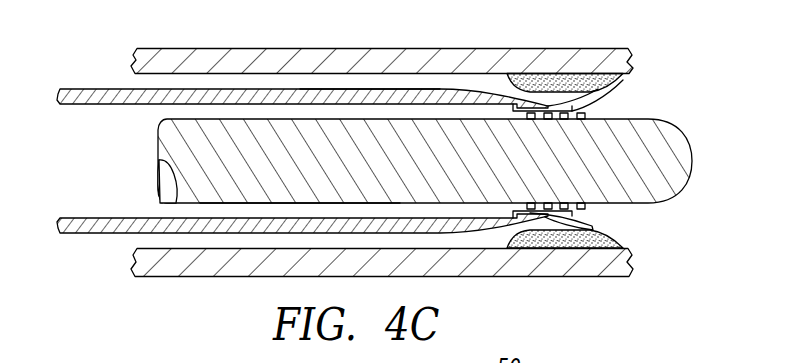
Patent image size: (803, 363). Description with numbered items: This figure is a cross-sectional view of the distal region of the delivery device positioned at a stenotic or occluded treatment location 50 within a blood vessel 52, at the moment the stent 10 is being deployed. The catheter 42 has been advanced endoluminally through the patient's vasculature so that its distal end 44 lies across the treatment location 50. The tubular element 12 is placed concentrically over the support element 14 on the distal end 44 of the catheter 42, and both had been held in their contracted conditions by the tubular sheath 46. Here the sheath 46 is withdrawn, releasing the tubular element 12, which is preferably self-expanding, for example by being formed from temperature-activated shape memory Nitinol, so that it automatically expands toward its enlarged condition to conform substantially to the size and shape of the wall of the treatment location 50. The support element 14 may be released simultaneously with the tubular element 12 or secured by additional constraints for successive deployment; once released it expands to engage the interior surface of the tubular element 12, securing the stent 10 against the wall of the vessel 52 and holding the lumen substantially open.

The stent 10 is at (608, 210).
The tubular element 12 is at (552, 110).
The support element 14 is at (587, 114).
The catheter 42 is at (238, 216).
The distal end 44 is at (693, 156).
The tubular sheath 46 is at (465, 72).
The treatment location 50 is at (623, 84).
The blood vessel 52 is at (147, 76).